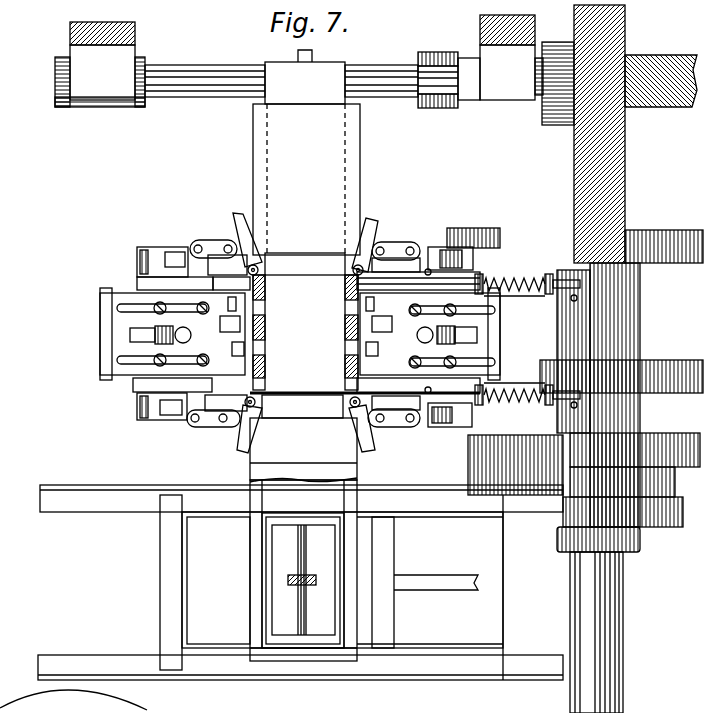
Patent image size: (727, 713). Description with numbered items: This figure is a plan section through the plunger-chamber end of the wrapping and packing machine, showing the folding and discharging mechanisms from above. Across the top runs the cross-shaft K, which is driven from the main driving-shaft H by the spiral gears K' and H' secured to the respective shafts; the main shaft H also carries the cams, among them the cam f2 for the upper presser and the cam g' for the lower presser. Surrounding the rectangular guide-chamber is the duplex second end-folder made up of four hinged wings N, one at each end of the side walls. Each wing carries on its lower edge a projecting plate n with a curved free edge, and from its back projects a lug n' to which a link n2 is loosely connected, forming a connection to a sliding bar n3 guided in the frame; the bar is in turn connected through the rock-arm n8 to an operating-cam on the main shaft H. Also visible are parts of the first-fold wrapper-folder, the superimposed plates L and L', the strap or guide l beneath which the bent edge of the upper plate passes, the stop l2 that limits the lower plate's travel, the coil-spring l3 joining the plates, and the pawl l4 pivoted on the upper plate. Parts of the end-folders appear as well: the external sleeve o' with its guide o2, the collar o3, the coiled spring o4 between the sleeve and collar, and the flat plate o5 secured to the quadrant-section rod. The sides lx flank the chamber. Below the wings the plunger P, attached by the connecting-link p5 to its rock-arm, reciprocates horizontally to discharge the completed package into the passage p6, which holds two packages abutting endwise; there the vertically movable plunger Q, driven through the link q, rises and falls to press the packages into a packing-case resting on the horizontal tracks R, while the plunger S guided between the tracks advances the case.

The shaft K is at (281, 88).
The spiral gear K' is at (613, 134).
The spiral gear H' is at (661, 70).
The main driving-shaft H is at (606, 632).
The cam g' is at (664, 236).
The connecting-link p5 is at (316, 56).
The plunger P is at (306, 179).
The passage p6 is at (303, 539).
The flat plate o5 is at (303, 335).
The post lx is at (265, 338).
The projecting plate n is at (304, 342).
The hinged wing N is at (302, 334).
The lug n' is at (303, 334).
The link n2 is at (420, 428).
The rock-arm n8 is at (455, 432).
The sliding bar n3 is at (435, 372).
The external sleeve o' is at (429, 324).
The cam f2 is at (525, 385).
The guide o2 is at (490, 414).
The collar o3 is at (548, 412).
The coiled spring o4 is at (514, 356).
The stop l2 is at (516, 338).
The coil-spring l3 is at (306, 335).
The pawl l4 is at (484, 335).
The upper plate L is at (304, 334).
The lower plate L' is at (306, 324).
The strap or guide l is at (303, 328).
The plunger Q is at (303, 580).
The link q is at (312, 574).
The tracks or ways R is at (300, 593).
The plunger S is at (425, 582).